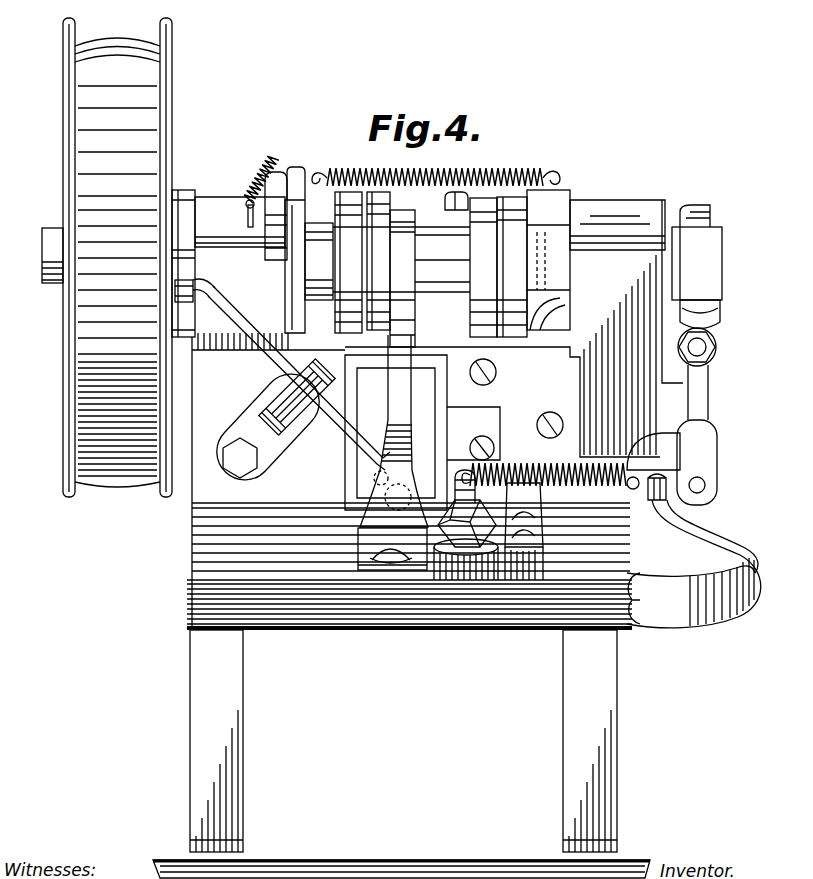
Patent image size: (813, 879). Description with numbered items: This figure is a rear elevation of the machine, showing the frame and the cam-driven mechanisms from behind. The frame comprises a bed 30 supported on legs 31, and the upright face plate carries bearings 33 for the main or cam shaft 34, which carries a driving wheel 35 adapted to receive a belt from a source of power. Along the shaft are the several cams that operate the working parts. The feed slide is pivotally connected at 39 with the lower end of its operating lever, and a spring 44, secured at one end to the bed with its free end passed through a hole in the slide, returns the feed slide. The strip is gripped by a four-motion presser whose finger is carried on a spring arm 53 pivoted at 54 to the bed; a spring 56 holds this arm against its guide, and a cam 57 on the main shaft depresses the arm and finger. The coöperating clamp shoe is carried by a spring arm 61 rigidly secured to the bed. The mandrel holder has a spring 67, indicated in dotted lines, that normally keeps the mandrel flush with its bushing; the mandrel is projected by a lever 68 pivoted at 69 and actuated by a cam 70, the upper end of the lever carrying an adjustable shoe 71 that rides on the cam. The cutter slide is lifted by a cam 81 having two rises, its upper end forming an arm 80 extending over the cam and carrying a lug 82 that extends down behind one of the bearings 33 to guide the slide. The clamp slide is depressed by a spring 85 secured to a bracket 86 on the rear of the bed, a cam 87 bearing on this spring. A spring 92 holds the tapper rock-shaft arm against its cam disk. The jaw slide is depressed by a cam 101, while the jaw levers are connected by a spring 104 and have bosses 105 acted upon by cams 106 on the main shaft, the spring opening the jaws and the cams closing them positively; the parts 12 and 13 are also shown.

The bracket cap 12 is at (712, 212).
The bracket 13 is at (708, 262).
The bed 30 is at (478, 632).
The legs 31 is at (228, 700).
The bearings 33 is at (612, 216).
The main or cam shaft 34 is at (50, 246).
The driving wheel 35 is at (117, 257).
The pivotal connection 39 is at (645, 478).
The spring 44 is at (752, 606).
The spring arm 53 is at (469, 486).
The pivot 54 is at (466, 540).
The spring 56 is at (515, 462).
The cam 57 is at (485, 210).
The spring arm 61 is at (524, 531).
The spring 67 is at (365, 493).
The lever 68 is at (299, 378).
The pivot 69 is at (262, 393).
The cam 70 is at (186, 196).
The adjustable shoe or bearing piece 71 is at (196, 280).
The arm 80 is at (300, 174).
The cam 81 is at (298, 272).
The lug 82 is at (270, 248).
The spring 85 is at (420, 393).
The bracket 86 is at (374, 572).
The cam 87 is at (410, 220).
The spring 92 is at (257, 184).
The cam 101 is at (349, 196).
The spring 104 is at (380, 196).
The bosses 105 is at (545, 258).
The cams 106 is at (553, 172).